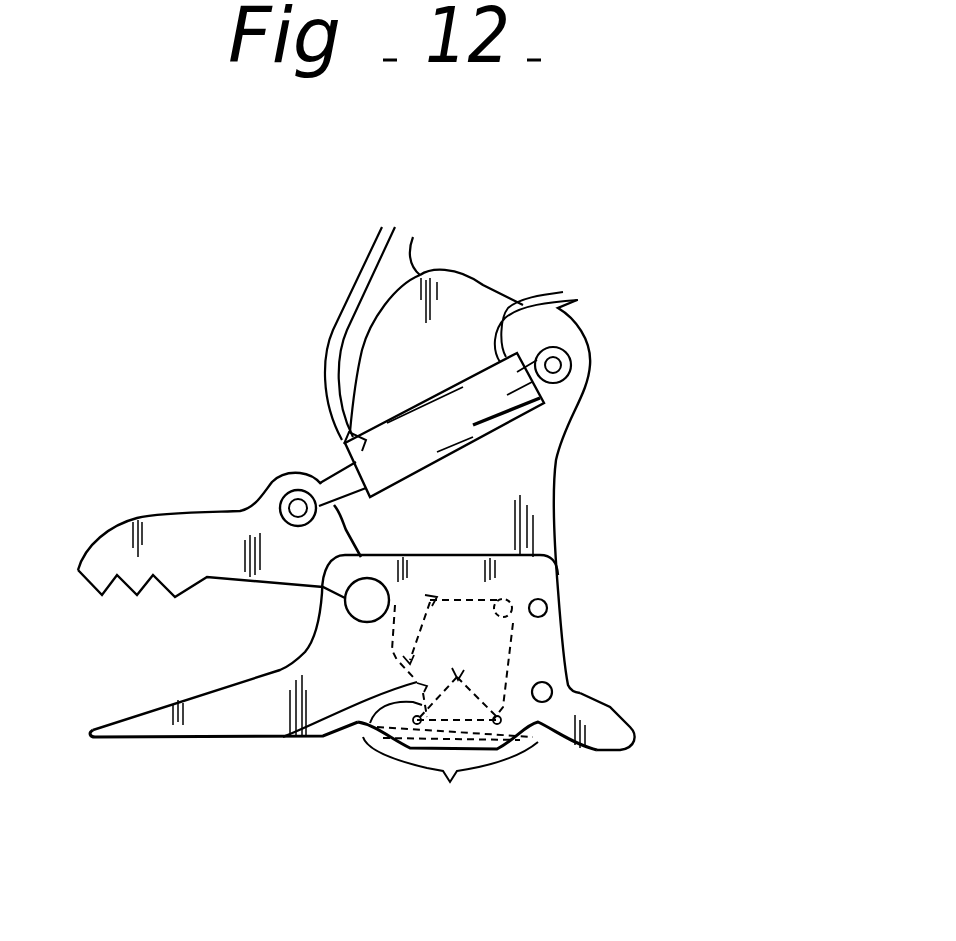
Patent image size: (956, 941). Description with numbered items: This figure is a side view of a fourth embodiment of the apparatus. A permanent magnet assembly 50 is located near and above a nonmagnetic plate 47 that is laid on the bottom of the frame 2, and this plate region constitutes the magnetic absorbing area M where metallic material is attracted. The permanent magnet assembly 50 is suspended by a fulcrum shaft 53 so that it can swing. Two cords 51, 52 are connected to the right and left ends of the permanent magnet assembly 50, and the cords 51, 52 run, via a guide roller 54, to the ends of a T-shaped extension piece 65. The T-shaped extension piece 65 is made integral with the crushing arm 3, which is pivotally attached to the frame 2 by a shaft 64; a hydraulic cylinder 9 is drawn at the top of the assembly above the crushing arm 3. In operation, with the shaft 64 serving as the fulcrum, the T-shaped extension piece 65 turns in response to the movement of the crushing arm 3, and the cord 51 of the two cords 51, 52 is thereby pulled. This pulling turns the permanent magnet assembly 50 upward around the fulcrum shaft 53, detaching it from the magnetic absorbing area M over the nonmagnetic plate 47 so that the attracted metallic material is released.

The frame 2 is at (153, 723).
The crushing arm 3 is at (146, 518).
The hydraulic cylinder 9 is at (347, 333).
The nonmagnetic plate 47 is at (487, 740).
The permanent magnet assembly 50 is at (543, 738).
The cord 51 is at (509, 672).
The cord 52 is at (363, 724).
The fulcrum shaft 53 is at (455, 680).
The guide roller 54 is at (503, 603).
The shaft 64 is at (353, 600).
The T-shaped extension piece 65 is at (407, 613).
The magnetic absorbing area M is at (450, 792).